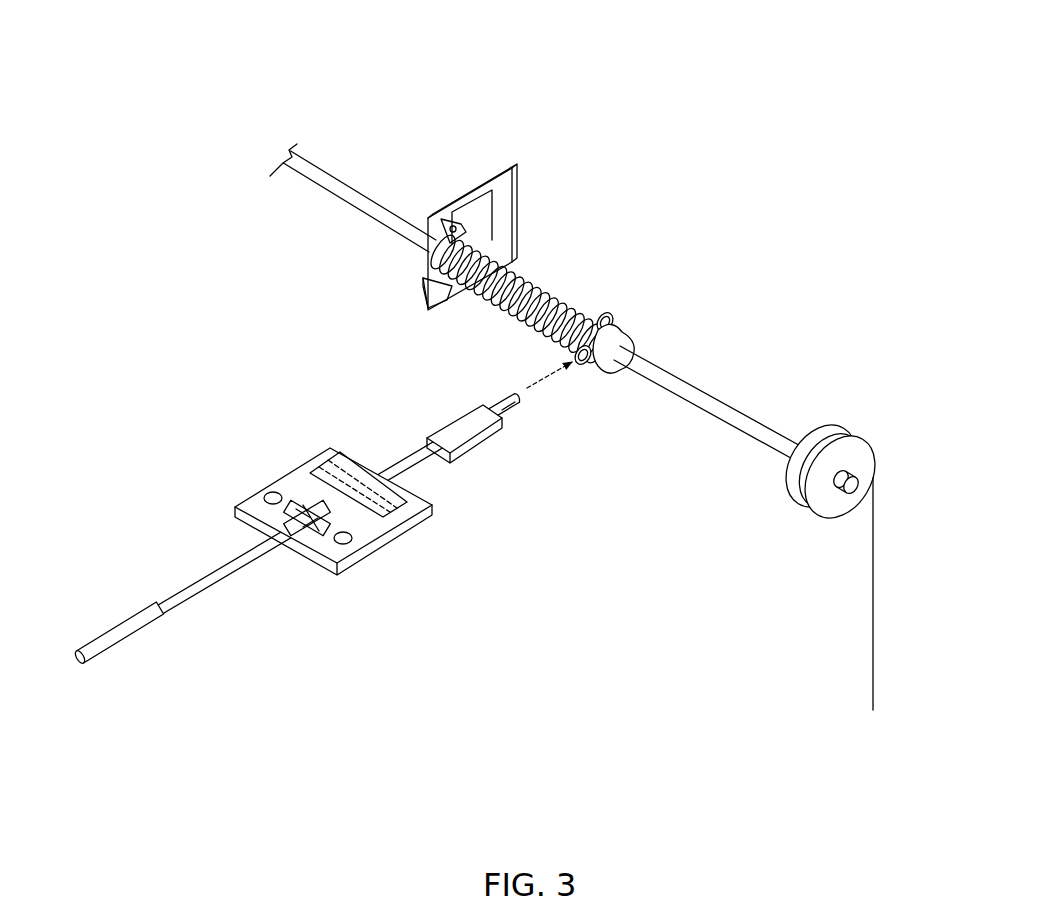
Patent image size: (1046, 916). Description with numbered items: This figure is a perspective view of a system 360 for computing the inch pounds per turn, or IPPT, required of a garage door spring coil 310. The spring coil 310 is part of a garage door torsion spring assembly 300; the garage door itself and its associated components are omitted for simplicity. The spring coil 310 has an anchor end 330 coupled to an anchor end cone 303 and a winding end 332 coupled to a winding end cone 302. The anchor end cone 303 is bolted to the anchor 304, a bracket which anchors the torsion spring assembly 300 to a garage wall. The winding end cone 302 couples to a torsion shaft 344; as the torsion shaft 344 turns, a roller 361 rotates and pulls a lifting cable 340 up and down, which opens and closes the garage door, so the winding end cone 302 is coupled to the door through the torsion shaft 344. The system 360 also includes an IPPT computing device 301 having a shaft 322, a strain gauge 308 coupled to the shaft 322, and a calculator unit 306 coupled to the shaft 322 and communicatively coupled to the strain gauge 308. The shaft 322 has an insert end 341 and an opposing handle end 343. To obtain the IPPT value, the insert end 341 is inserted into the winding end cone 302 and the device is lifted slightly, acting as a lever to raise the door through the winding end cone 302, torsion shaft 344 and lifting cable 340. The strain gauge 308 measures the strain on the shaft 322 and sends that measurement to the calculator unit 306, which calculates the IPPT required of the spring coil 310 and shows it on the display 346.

The garage door torsion spring assembly 300 is at (621, 204).
The IPPT computing device 301 is at (254, 438).
The winding end cone 302 is at (626, 336).
The anchor end cone 303 is at (436, 256).
The anchor 304 is at (503, 183).
The calculator unit 306 is at (388, 540).
The strain gauge 308 is at (472, 440).
The garage door spring coil 310 is at (548, 282).
The shaft 322 is at (210, 594).
The anchor end 330 is at (425, 283).
The winding end 332 is at (609, 296).
The lifting cable 340 is at (874, 534).
The insert end 341 is at (524, 402).
The handle end 343 is at (102, 657).
The torsion shaft 344 is at (742, 410).
The display 346 is at (338, 462).
The system 360 is at (521, 86).
The roller 361 is at (858, 456).